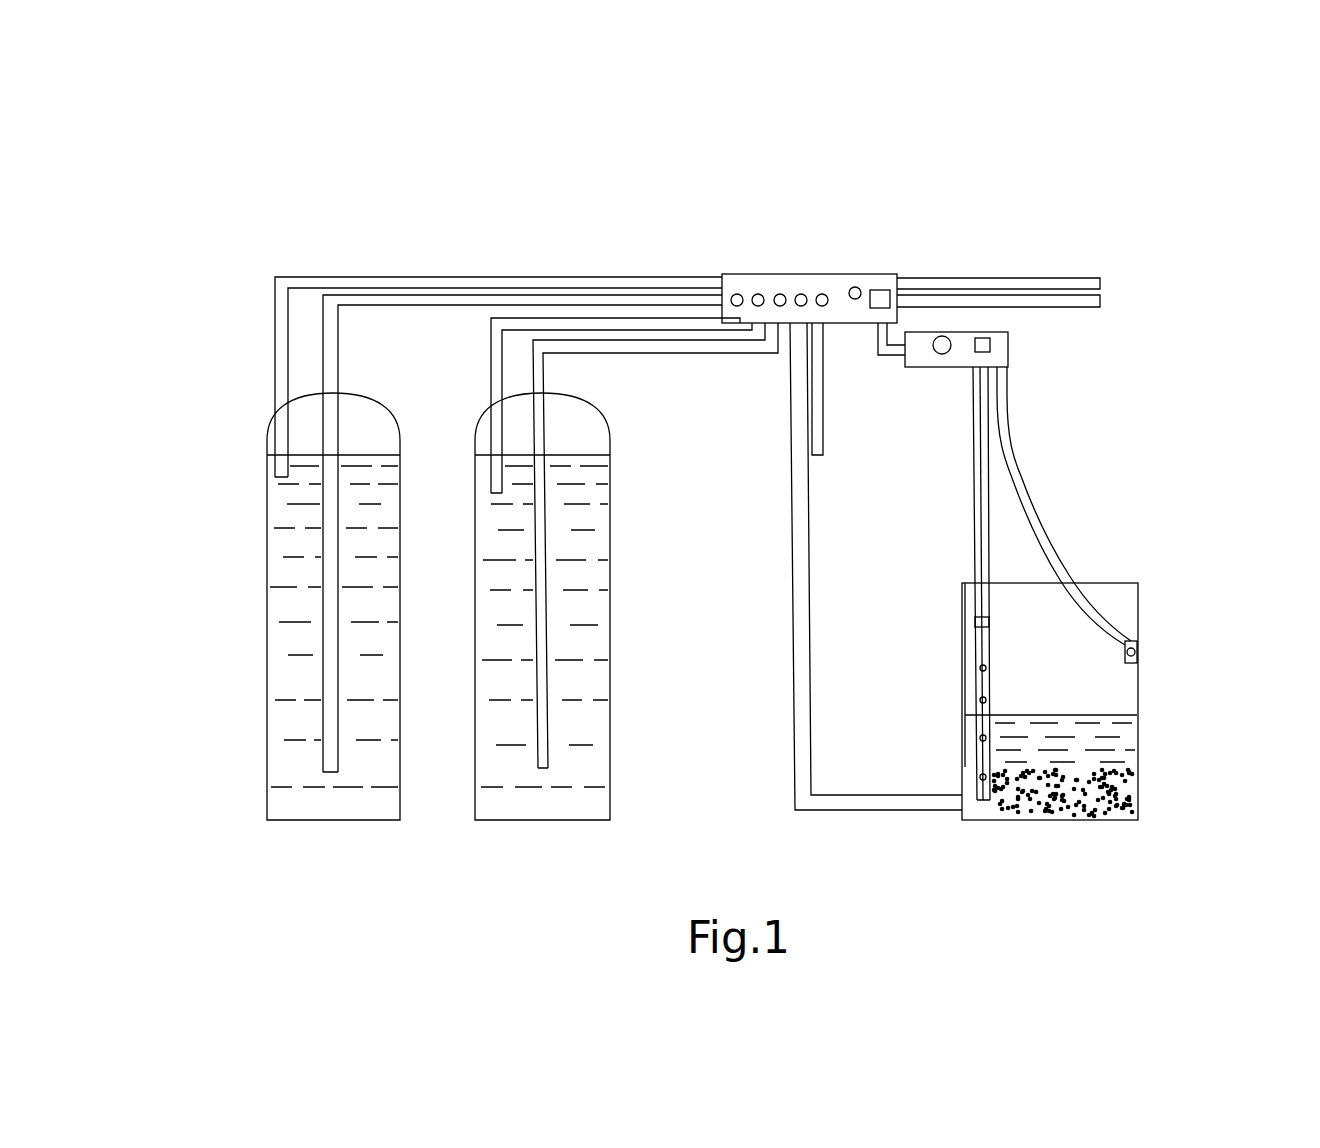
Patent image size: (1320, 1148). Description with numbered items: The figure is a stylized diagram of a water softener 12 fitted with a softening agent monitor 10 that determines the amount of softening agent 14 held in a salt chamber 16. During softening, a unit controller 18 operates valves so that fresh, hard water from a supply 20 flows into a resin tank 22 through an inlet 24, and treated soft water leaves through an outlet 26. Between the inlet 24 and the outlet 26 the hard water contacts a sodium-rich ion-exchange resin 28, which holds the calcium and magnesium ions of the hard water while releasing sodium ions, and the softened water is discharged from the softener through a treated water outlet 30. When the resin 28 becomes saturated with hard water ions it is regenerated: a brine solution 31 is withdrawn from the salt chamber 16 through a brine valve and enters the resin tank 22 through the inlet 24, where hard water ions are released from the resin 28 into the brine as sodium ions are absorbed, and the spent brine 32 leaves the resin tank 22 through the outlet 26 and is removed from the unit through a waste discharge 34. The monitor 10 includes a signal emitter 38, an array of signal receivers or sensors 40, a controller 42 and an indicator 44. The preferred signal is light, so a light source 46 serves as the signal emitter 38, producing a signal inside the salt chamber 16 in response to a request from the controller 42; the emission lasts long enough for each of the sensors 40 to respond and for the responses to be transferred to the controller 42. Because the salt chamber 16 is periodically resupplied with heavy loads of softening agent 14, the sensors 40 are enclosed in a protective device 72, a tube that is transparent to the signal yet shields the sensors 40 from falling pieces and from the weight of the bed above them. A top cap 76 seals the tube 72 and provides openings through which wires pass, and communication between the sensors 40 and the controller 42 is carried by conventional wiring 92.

The softening agent monitor 10 is at (1058, 380).
The water softener 12 is at (388, 233).
The softening agent 14 is at (1138, 778).
The salt chamber 16 is at (1127, 613).
The unit controller 18 is at (753, 230).
The supply 20 is at (1003, 283).
The resin tank 22 is at (267, 632).
The inlet 24 is at (288, 350).
The outlet 26 is at (323, 355).
The ion-exchange resin 28 is at (290, 718).
The treated water outlet 30 is at (1018, 300).
The brine solution 31 is at (1130, 730).
The spent brine 32 is at (803, 753).
The waste discharge 34 is at (818, 400).
The signal emitter 38 is at (1138, 643).
The signal receivers or sensors 40 is at (980, 698).
The controller 42 is at (923, 358).
The indicator 44 is at (942, 335).
The light source 46 is at (1138, 653).
The protective device 72 is at (983, 652).
The top cap 76 is at (977, 620).
The wiring 92 is at (972, 437).